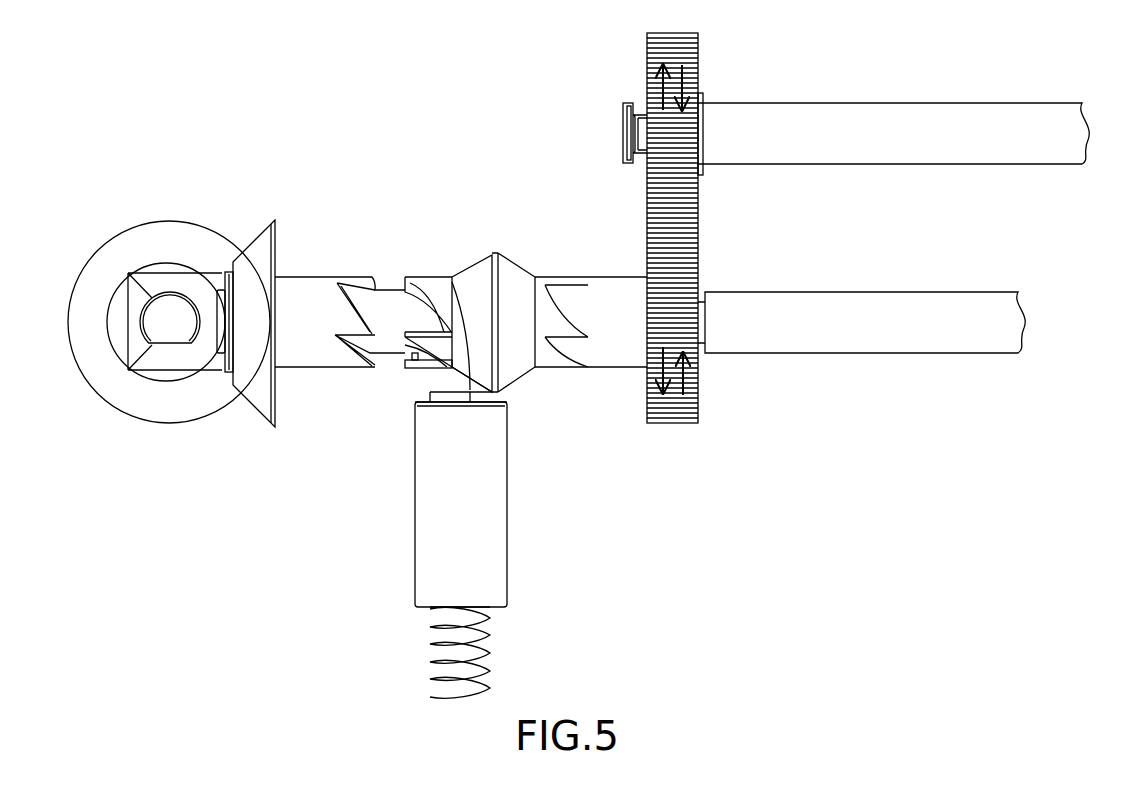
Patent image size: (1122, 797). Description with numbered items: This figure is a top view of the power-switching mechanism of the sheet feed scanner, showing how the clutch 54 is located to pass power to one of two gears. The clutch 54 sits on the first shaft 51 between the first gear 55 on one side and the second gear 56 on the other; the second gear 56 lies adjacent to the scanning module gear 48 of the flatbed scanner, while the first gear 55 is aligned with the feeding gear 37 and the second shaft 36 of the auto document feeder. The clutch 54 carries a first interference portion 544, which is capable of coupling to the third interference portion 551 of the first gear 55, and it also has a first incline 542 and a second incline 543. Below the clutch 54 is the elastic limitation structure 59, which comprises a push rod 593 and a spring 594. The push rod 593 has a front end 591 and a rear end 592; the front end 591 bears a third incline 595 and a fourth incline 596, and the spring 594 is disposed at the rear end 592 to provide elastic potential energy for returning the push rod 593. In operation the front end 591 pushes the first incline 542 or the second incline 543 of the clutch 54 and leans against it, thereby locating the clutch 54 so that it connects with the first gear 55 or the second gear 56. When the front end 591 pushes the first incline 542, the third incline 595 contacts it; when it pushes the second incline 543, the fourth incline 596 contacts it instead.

The scanning module gear 48 is at (115, 252).
The second gear 56 is at (264, 262).
The first incline 542 is at (407, 280).
The fourth incline 596 is at (440, 377).
The clutch 54 is at (523, 278).
The second incline 543 is at (520, 380).
The third incline 595 is at (477, 390).
The front end 591 is at (465, 392).
The third interference portion 551 is at (568, 290).
The first interference portion 544 is at (562, 322).
The first gear 55 is at (677, 283).
The feeding gear 37 is at (680, 45).
The second shaft 36 is at (805, 108).
The first shaft 51 is at (805, 300).
The push rod 593 is at (430, 563).
The elastic limitation structure 59 is at (513, 513).
The rear end 592 is at (495, 608).
The spring 594 is at (430, 648).